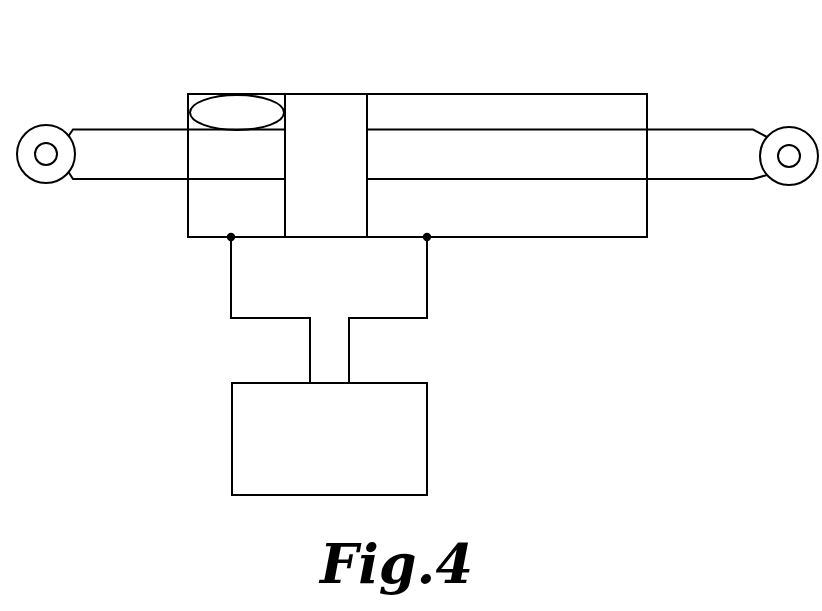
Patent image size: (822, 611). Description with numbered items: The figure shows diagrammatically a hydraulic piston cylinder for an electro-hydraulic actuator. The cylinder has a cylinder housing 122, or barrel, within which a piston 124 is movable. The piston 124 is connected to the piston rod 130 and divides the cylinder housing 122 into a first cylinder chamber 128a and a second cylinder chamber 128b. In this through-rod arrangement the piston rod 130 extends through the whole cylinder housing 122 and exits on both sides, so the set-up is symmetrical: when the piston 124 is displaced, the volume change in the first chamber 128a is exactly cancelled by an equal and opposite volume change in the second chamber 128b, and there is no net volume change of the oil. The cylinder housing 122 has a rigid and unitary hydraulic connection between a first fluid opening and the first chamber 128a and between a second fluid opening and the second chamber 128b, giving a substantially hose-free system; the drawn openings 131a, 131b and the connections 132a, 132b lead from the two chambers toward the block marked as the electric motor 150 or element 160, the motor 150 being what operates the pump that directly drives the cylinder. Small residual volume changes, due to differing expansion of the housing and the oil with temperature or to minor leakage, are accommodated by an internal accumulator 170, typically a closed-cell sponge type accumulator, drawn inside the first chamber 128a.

The cylinder housing 122 is at (210, 239).
The piston 124 is at (368, 110).
The first cylinder chamber 128a is at (197, 129).
The second cylinder chamber 128b is at (568, 239).
The piston rod 130 is at (677, 130).
The first port 131a is at (232, 238).
The second port 131b is at (426, 238).
The first conduit 132a is at (231, 295).
The second conduit 132b is at (427, 292).
The electric motor 150 is at (427, 446).
The pump or valve unit 160 is at (408, 439).
The internal accumulator 170 is at (237, 101).